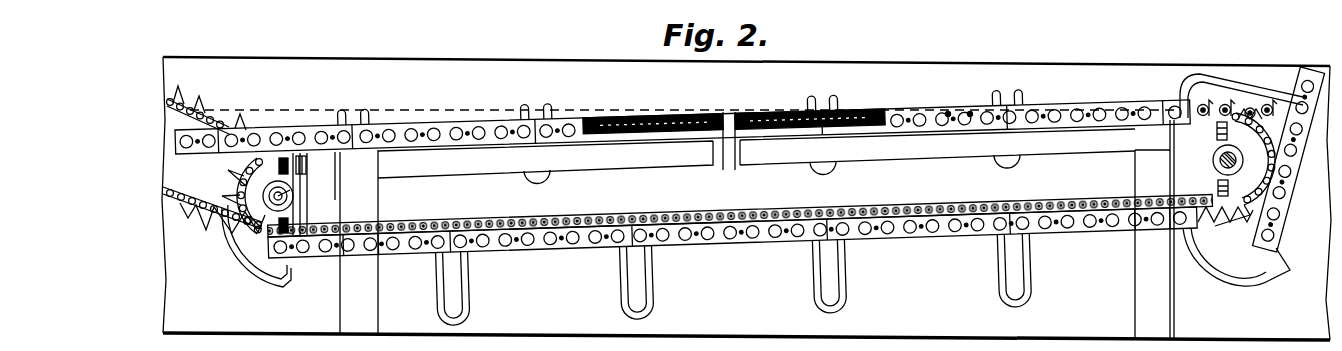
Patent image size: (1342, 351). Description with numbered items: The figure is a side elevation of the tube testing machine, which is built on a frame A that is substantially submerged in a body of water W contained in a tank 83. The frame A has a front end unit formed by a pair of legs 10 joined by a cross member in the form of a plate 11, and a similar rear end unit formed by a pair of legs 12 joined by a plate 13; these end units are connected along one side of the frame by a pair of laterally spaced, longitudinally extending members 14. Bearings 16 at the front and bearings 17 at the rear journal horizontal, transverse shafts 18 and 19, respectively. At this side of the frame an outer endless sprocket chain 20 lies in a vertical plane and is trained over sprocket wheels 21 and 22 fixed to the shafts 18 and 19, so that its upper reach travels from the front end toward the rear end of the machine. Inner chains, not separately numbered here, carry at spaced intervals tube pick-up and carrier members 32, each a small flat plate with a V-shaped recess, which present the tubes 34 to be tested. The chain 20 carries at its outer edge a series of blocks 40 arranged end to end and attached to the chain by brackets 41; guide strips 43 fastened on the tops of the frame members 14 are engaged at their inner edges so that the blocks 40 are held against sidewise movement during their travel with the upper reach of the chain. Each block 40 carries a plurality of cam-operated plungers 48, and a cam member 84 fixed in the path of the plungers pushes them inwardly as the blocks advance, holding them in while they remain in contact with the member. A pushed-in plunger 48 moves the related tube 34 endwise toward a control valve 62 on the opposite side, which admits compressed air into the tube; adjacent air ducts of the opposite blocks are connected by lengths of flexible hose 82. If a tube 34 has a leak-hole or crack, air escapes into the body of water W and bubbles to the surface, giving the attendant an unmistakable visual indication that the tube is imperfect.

The leg 10 is at (1158, 283).
The plate 11 is at (1172, 167).
The leg 12 is at (364, 288).
The plate 13 is at (337, 170).
The longitudinally extending member 14 is at (572, 162).
The bearing 16 is at (1216, 155).
The bearing 17 is at (298, 180).
The shaft 18 is at (1225, 166).
The shaft 19 is at (296, 198).
The outer endless sprocket chain 20 is at (872, 172).
The sprocket wheel 21 is at (1227, 138).
The sprocket wheel 22 is at (222, 177).
The tube pick-up and carrier member 32 is at (230, 240).
The tube 34 is at (1203, 104).
The block 40 is at (443, 130).
The bracket 41 is at (530, 218).
The guide strip 43 is at (920, 127).
The cam-operated plunger 48 is at (970, 112).
The control valve 62 is at (238, 273).
The flexible tube or conduit 82 is at (1244, 261).
The tank 83 is at (605, 60).
The cam member 84 is at (750, 118).
The frame A is at (722, 152).
The body of water W is at (307, 108).